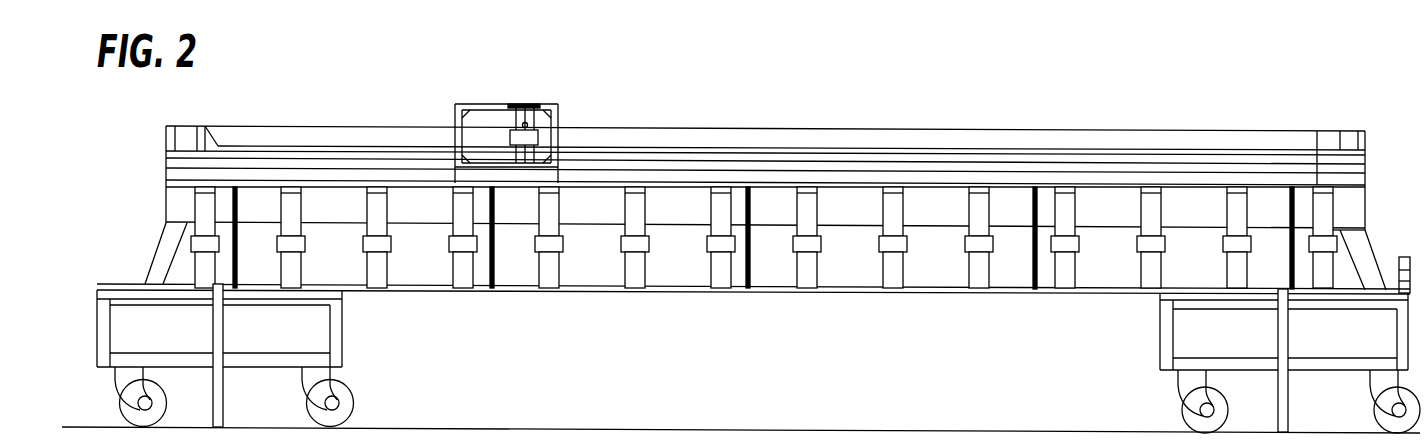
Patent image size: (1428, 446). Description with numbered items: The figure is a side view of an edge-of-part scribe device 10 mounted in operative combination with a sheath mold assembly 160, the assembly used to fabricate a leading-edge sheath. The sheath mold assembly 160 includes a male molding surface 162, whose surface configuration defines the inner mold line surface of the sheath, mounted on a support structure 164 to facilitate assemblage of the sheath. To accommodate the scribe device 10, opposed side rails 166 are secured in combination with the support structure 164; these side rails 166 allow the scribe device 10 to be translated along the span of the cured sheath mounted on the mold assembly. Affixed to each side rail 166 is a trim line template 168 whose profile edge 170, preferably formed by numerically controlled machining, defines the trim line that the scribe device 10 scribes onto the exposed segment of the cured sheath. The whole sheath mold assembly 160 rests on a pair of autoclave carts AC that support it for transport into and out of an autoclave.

The edge-of-part scribe device 10 is at (548, 96).
The sheath mold assembly 160 is at (776, 185).
The male molding surface 162 is at (1076, 122).
The support structure 164 is at (1129, 250).
The side rail 166 is at (677, 182).
The trim line template 168 is at (777, 182).
The profile edge 170 is at (1000, 185).
The autoclave cart AC is at (358, 344).